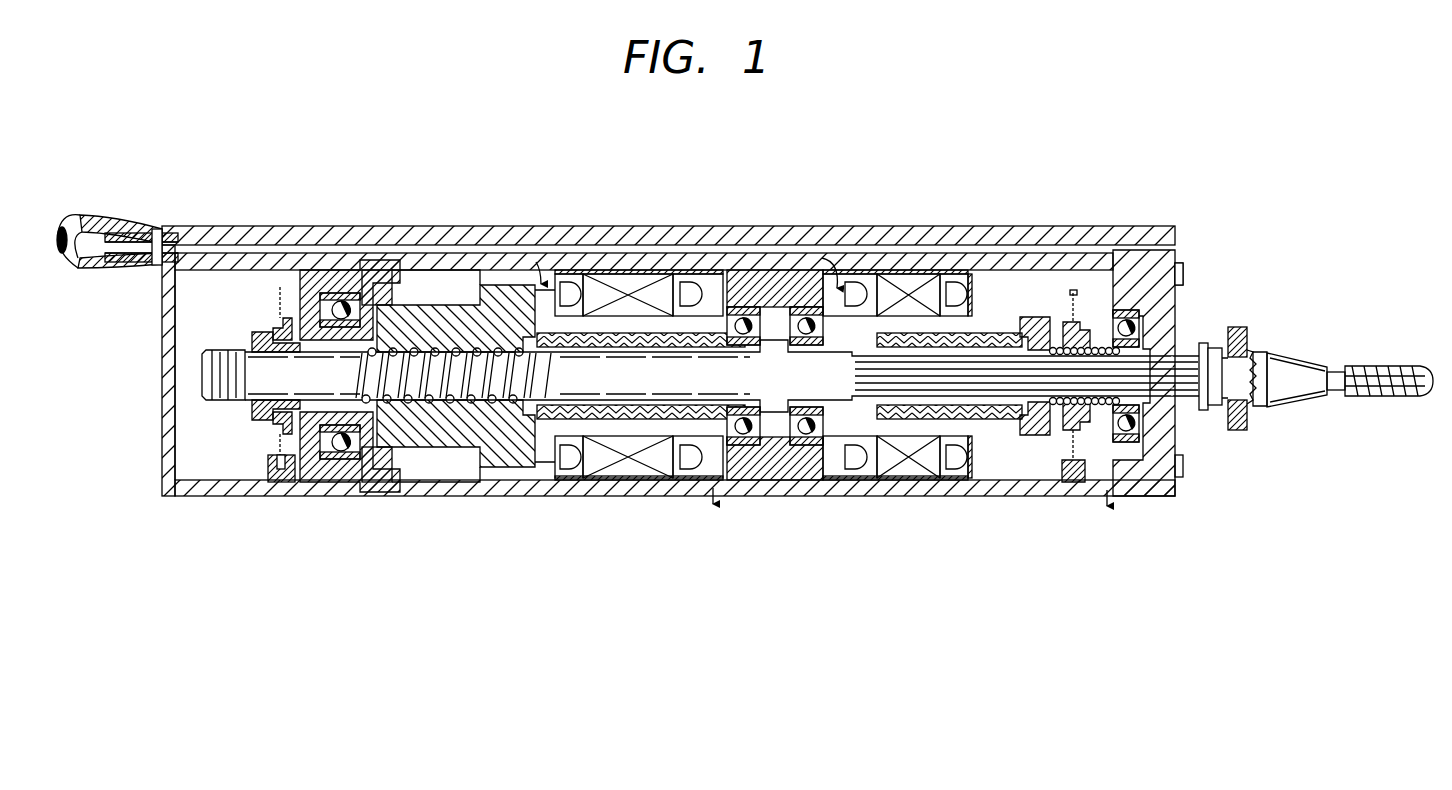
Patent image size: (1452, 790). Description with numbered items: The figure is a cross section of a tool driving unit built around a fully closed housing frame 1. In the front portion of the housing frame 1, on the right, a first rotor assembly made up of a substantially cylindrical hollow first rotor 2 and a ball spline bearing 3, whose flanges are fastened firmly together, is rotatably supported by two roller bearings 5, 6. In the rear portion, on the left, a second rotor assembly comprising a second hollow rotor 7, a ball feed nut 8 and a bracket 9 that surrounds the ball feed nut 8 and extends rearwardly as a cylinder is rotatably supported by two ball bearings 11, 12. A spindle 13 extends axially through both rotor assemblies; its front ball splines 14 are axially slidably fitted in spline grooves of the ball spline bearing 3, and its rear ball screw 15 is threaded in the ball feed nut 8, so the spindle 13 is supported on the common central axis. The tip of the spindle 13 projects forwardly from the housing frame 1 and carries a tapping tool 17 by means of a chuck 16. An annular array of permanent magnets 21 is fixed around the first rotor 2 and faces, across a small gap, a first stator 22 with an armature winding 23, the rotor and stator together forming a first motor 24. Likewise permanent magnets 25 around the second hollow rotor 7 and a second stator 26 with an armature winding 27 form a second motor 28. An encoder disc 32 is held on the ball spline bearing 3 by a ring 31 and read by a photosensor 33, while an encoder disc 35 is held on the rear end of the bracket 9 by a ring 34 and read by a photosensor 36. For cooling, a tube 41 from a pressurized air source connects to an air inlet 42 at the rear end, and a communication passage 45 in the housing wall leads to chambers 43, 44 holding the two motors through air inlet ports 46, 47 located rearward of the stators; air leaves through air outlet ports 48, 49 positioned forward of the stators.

The housing frame 1 is at (1162, 242).
The first rotor 2 is at (984, 440).
The ball spline bearing 3 is at (1033, 317).
The roller bearing 5 is at (805, 307).
The roller bearing 6 is at (1184, 279).
The second hollow rotor 7 is at (553, 447).
The ball feed nut 8 is at (537, 420).
The bracket 9 is at (418, 455).
The ball bearing 11 is at (334, 288).
The ball bearing 12 is at (745, 318).
The spindle 13 is at (773, 364).
The ball splines 14 is at (1001, 368).
The ball screw 15 is at (260, 382).
The chuck 16 is at (1293, 372).
The tapping tool 17 is at (1368, 363).
The permanent magnets 21 is at (935, 480).
The first stator 22 is at (912, 480).
The armature winding 23 is at (860, 480).
The first motor 24 is at (922, 402).
The permanent magnets 25 is at (645, 422).
The second stator 26 is at (613, 480).
The armature winding 27 is at (573, 468).
The second motor 28 is at (633, 387).
The ring 31 is at (1124, 318).
The encoder disc 32 is at (1070, 292).
The photosensor 33 is at (1049, 470).
The ring 34 is at (265, 330).
The encoder disc 35 is at (279, 317).
The photosensor 36 is at (280, 483).
The tube 41 is at (78, 213).
The air inlet 42 is at (158, 232).
The chamber 43 is at (1020, 290).
The chamber 44 is at (706, 280).
The communication passage 45 is at (479, 245).
The air inlet port 46 is at (843, 250).
The air inlet port 47 is at (538, 258).
The air outlet port 48 is at (1102, 493).
The air outlet port 49 is at (705, 500).